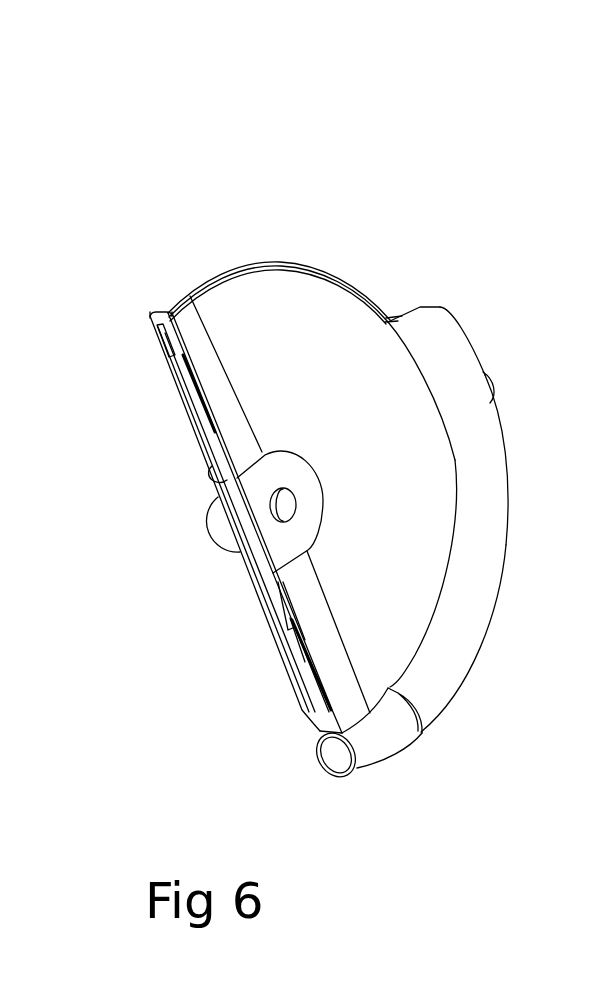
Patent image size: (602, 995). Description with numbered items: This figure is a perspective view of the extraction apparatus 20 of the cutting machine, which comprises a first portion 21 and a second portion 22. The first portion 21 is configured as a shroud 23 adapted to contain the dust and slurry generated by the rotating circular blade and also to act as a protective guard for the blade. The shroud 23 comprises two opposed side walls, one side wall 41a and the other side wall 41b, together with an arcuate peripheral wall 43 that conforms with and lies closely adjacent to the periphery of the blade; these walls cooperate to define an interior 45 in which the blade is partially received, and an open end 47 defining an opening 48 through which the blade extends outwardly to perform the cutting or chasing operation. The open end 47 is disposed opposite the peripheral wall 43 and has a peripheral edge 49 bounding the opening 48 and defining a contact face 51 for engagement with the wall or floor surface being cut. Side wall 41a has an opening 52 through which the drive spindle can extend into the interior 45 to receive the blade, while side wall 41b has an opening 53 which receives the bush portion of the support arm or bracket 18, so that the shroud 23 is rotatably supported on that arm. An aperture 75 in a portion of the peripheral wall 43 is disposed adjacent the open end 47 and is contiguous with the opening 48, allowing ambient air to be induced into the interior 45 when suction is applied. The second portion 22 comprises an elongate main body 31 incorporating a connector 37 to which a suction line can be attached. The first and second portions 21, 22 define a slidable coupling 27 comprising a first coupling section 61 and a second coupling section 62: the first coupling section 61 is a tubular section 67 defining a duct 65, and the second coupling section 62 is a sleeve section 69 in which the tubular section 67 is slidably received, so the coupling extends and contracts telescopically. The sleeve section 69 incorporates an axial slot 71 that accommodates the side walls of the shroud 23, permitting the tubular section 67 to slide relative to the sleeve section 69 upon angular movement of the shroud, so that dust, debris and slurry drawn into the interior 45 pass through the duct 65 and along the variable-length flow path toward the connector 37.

The extraction apparatus 20 is at (198, 183).
The first portion 21 is at (234, 287).
The second portion 22 is at (475, 502).
The shroud 23 is at (337, 293).
The slidable coupling 27 is at (417, 745).
The main body 31 is at (470, 418).
The connector 37 is at (492, 380).
The side wall 41a is at (403, 523).
The side wall 41b is at (240, 562).
The peripheral wall 43 is at (283, 265).
The interior 45 is at (247, 540).
The open end 47 is at (172, 352).
The opening 48 is at (170, 372).
The peripheral edge 49 is at (158, 316).
The contact face 51 is at (157, 320).
The opening 52 is at (228, 524).
The opening 53 is at (240, 508).
The first coupling section 61 is at (383, 724).
The second coupling section 62 is at (442, 657).
The duct 65 is at (338, 752).
The tubular section 67 is at (322, 762).
The sleeve section 69 is at (460, 375).
The slot 71 is at (389, 318).
The aperture 75 is at (315, 700).
The support arm or bracket 18 is at (215, 510).